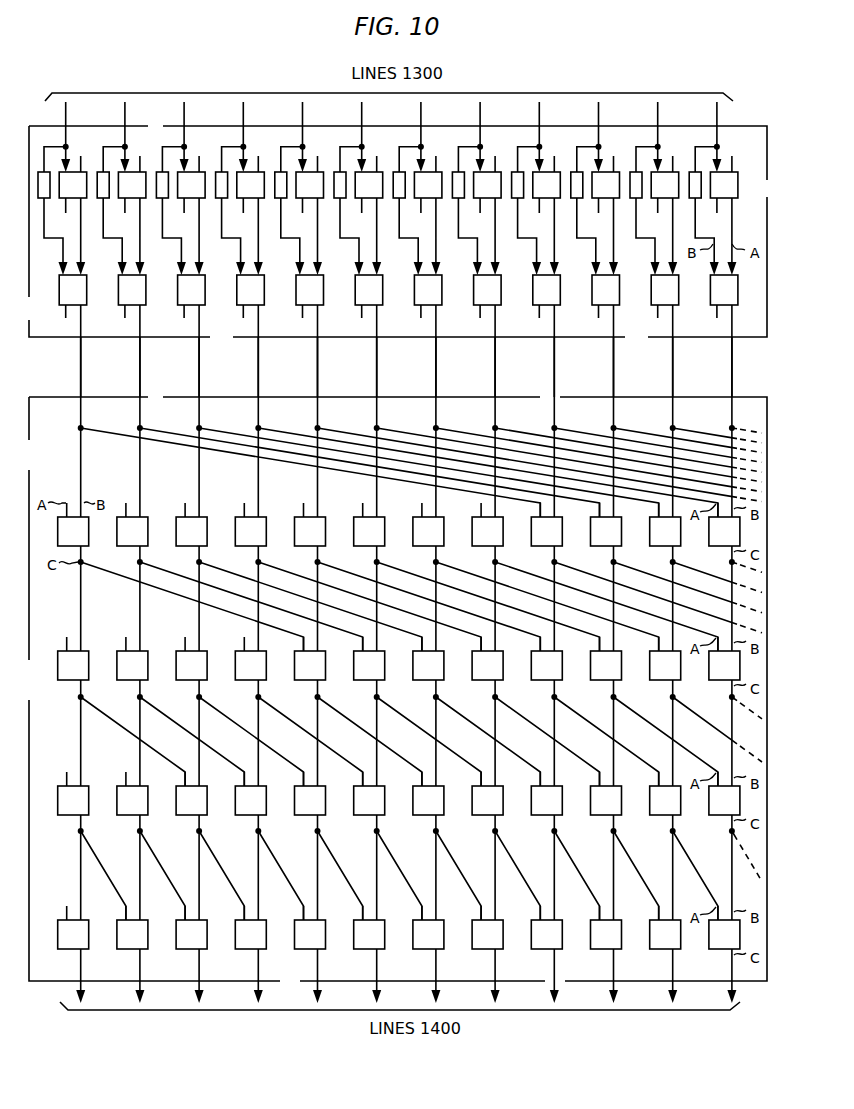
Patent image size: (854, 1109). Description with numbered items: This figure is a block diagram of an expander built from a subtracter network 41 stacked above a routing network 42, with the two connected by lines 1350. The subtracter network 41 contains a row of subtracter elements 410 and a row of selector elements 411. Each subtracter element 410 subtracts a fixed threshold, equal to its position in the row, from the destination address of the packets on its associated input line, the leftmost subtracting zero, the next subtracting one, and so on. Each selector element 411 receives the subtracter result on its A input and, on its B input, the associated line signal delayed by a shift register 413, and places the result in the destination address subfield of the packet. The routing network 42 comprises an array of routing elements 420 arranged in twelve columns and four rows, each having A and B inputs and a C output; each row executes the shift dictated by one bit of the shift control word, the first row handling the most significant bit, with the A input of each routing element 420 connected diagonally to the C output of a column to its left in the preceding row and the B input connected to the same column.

The subtracter network 41 is at (35, 123).
The routing network 42 is at (48, 395).
The shift register 413 is at (224, 163).
The subtracter element 410 is at (264, 164).
The selector element 411 is at (710, 290).
The lines 1350 is at (720, 369).
The routing element 420 is at (771, 933).